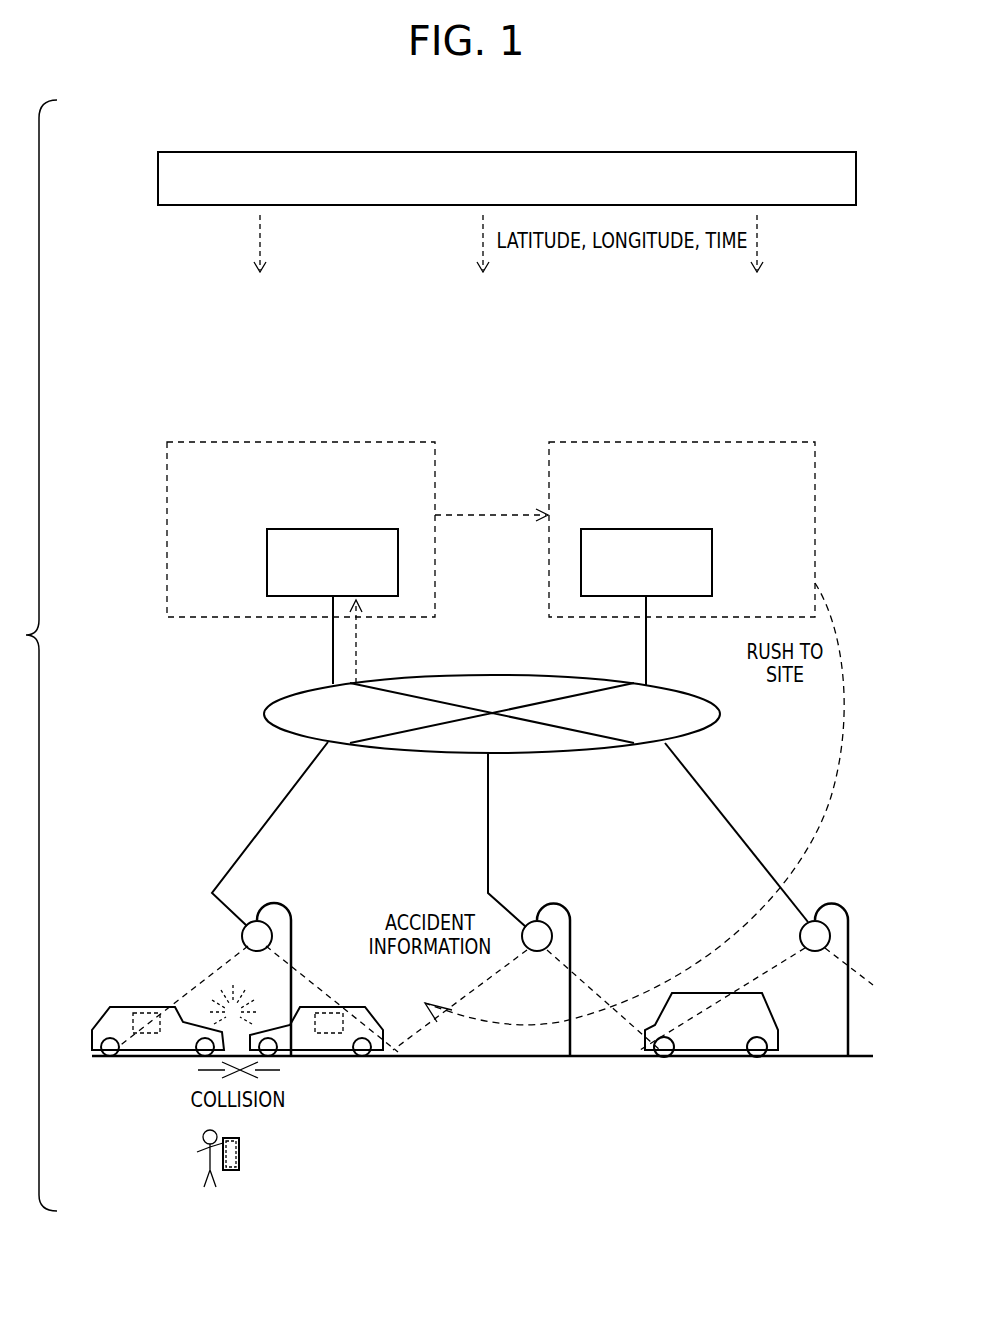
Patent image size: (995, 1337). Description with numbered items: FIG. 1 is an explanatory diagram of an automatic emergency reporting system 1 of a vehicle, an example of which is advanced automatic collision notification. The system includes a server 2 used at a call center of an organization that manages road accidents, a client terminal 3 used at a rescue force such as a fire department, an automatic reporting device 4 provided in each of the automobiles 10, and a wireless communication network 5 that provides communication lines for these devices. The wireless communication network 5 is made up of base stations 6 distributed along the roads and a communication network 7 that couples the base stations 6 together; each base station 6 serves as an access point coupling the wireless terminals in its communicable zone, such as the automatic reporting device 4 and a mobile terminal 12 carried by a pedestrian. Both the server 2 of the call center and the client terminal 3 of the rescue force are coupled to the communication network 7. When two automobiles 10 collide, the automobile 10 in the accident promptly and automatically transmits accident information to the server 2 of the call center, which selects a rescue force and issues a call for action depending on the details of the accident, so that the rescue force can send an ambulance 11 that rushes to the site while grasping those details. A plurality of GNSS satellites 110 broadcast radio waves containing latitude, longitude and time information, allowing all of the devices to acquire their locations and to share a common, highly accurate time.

The automatic emergency reporting system 1 is at (492, 442).
The server 2 is at (398, 565).
The client terminal 3 is at (712, 565).
The automatic reporting device 4 is at (150, 1058).
The wireless communication network 5 is at (203, 667).
The base station 6 is at (254, 920).
The communication network 7 is at (720, 717).
The automobile 10 is at (237, 1082).
The ambulance 11 is at (740, 1058).
The mobile terminal 12 is at (240, 1152).
The GNSS satellites 110 is at (651, 152).